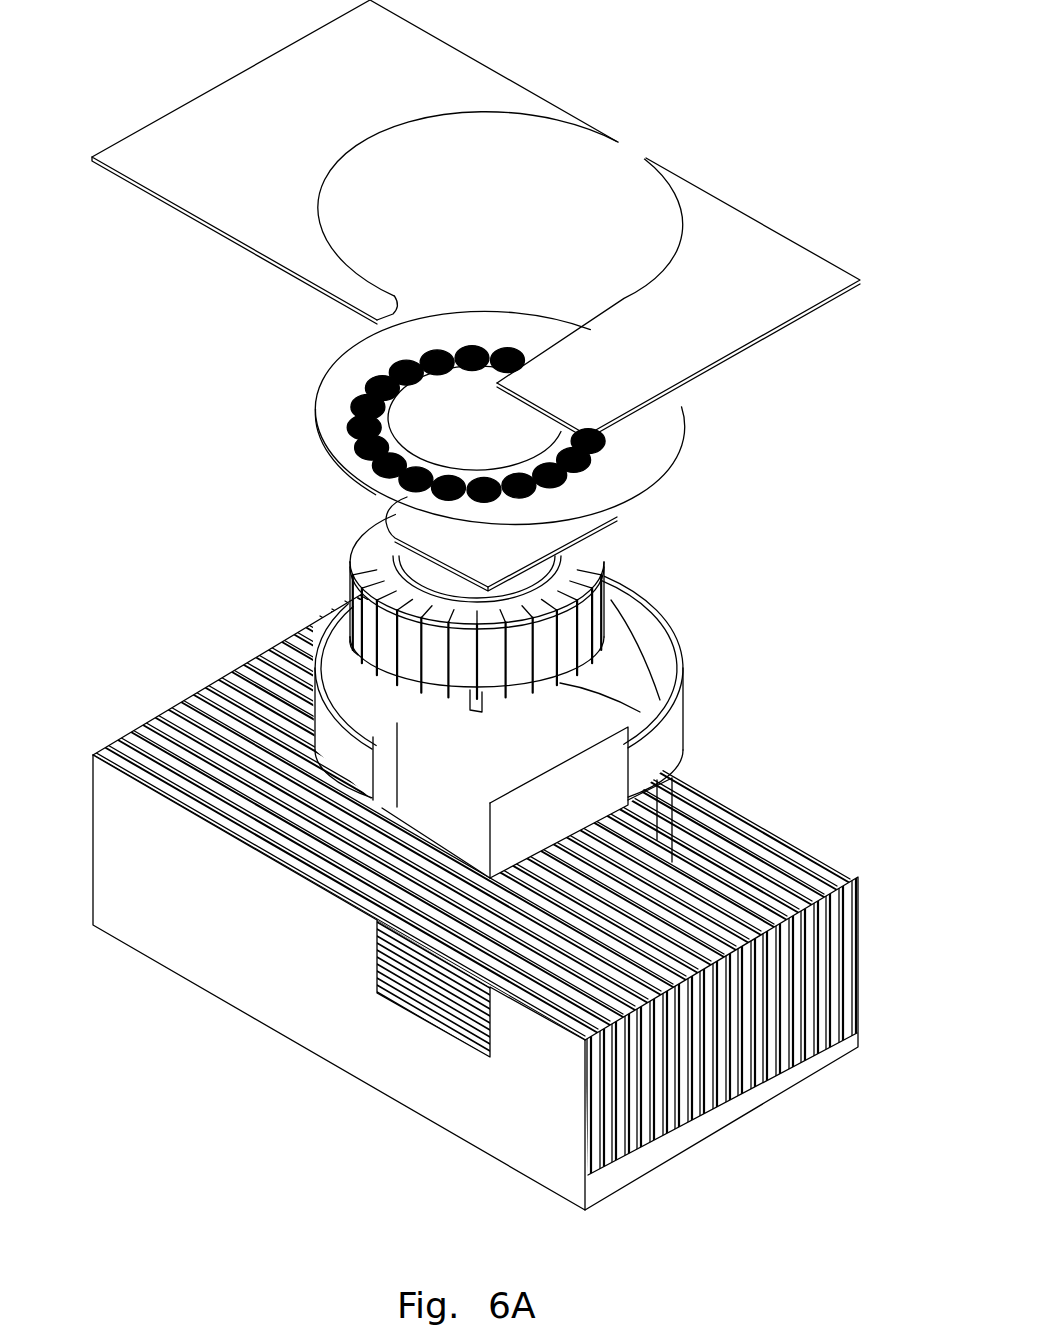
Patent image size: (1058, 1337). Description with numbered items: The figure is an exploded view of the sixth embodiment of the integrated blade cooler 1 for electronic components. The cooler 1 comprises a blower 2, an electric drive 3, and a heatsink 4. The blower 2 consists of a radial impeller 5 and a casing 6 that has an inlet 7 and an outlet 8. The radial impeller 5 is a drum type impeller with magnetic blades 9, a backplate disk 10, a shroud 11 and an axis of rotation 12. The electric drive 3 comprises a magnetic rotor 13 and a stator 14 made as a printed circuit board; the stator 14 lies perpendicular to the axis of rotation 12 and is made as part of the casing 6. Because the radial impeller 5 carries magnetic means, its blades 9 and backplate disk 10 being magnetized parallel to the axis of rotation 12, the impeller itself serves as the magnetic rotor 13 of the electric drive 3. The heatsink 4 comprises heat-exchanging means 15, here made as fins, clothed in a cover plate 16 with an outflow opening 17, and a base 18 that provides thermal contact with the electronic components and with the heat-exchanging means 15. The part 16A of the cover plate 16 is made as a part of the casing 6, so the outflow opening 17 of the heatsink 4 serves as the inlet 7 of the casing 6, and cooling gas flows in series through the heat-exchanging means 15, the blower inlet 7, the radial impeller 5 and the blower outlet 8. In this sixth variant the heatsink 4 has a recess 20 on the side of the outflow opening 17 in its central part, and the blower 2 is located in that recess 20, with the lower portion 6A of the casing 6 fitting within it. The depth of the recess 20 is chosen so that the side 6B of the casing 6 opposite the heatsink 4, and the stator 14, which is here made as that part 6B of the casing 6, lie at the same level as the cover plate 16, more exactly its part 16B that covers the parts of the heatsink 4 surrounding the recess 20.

The integrated blade cooler 1 is at (155, 1073).
The blower 2 is at (690, 545).
The electric drive 3 is at (706, 468).
The heatsink 4 is at (223, 943).
The radial impeller 5 is at (272, 556).
The casing 6 is at (640, 645).
The part of the casing 6A is at (643, 750).
The side of the casing 6B is at (650, 425).
The inlet 7 is at (610, 657).
The outlet 8 is at (437, 818).
The magnetic blades 9 is at (368, 641).
The backplate disk 10 is at (353, 530).
The shroud 11 is at (575, 681).
The axis of rotation 12 is at (473, 705).
The magnetic rotor 13 is at (327, 596).
The stator 14 is at (343, 392).
The heat-exchanging means 15 is at (753, 1010).
The cover plate 16 is at (735, 255).
The part of the cover plate 16A is at (589, 685).
The part of the cover plate 16B is at (489, 219).
The outflow opening 17 is at (726, 650).
The base 18 is at (718, 1117).
The recess 20 is at (403, 1003).